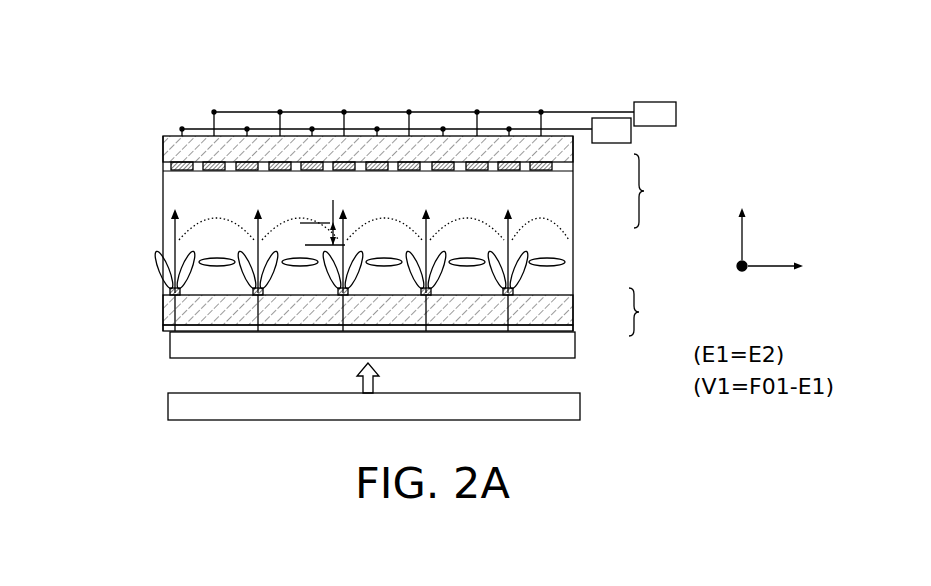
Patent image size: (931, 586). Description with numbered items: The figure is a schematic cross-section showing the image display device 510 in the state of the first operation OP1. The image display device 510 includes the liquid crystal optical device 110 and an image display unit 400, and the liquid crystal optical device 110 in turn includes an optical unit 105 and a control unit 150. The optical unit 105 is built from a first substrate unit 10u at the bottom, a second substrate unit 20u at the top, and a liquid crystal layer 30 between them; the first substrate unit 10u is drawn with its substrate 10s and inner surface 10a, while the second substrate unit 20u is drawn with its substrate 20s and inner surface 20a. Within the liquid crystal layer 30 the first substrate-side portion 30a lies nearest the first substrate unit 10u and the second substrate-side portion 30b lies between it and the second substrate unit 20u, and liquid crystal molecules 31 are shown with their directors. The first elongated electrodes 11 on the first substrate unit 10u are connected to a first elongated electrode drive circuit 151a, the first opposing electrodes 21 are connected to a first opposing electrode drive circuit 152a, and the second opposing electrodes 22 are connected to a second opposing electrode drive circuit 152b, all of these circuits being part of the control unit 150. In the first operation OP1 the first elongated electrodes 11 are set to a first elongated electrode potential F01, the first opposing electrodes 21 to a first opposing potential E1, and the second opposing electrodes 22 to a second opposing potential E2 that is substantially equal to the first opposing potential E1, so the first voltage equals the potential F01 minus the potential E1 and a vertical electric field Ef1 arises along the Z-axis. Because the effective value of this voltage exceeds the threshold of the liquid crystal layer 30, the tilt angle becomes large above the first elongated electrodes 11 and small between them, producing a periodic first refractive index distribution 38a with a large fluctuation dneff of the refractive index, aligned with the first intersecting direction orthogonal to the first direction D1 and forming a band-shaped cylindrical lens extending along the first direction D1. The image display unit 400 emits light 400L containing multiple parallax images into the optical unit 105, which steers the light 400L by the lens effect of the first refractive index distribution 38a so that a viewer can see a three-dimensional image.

The first operation OP1 is at (135, 123).
The second substrate 20s is at (553, 151).
The second opposing electrodes 22 is at (545, 166).
The first opposing electrodes 21 is at (517, 172).
The second substrate unit 20u is at (664, 191).
The first opposing potential E1 is at (562, 128).
The second opposing potential E2 is at (580, 111).
The first opposing electrode drive circuit 152a is at (632, 136).
The second opposing electrode drive circuit 152b is at (662, 92).
The vertical electric field Ef1 is at (173, 235).
The first refractive index distribution 38a is at (200, 217).
The liquid crystal layer 30 is at (548, 250).
The liquid crystal molecules 31 is at (555, 262).
The first elongated electrodes 11 is at (515, 293).
The first substrate 10s is at (555, 314).
The first substrate unit 10u is at (659, 312).
The second substrate inner surface 20a is at (172, 177).
The second substrate-side portion 30b is at (163, 184).
The first substrate-side portion 30a is at (160, 274).
The first substrate inner surface 10a is at (170, 292).
The first elongated electrode potential F01 is at (170, 332).
The fluctuation of the refractive index dneff is at (338, 213).
The first elongated electrode drive circuit 151a is at (578, 345).
The control unit 150 is at (590, 380).
The image display unit 400 is at (168, 410).
The light 400L is at (358, 385).
The image display device 510 is at (730, 122).
The liquid crystal optical device 110 is at (722, 164).
The optical unit 105 is at (715, 186).
The first direction D1 is at (790, 244).